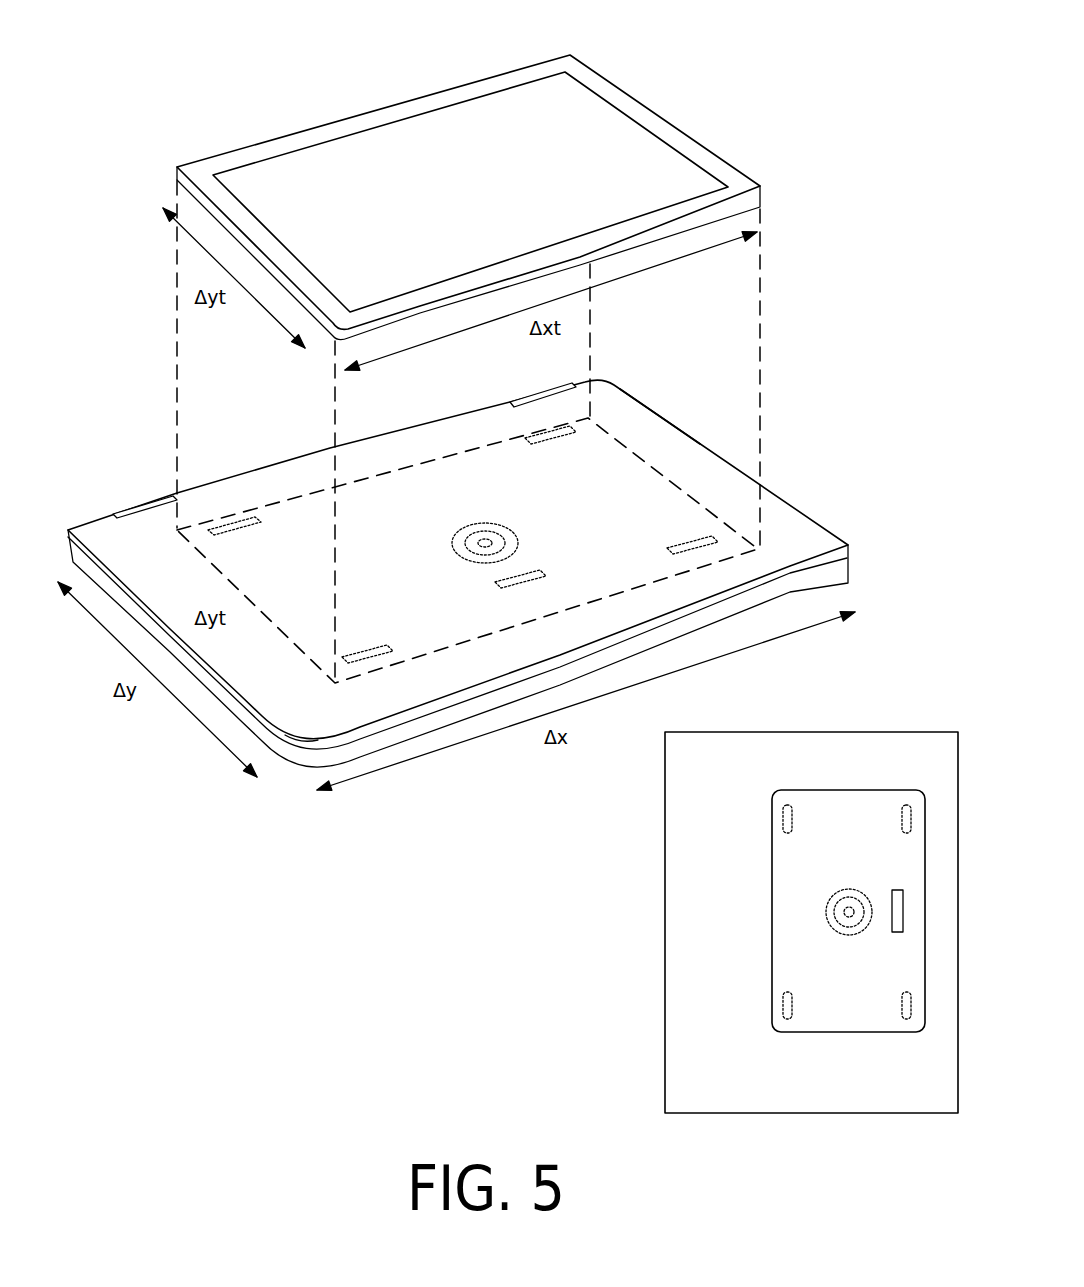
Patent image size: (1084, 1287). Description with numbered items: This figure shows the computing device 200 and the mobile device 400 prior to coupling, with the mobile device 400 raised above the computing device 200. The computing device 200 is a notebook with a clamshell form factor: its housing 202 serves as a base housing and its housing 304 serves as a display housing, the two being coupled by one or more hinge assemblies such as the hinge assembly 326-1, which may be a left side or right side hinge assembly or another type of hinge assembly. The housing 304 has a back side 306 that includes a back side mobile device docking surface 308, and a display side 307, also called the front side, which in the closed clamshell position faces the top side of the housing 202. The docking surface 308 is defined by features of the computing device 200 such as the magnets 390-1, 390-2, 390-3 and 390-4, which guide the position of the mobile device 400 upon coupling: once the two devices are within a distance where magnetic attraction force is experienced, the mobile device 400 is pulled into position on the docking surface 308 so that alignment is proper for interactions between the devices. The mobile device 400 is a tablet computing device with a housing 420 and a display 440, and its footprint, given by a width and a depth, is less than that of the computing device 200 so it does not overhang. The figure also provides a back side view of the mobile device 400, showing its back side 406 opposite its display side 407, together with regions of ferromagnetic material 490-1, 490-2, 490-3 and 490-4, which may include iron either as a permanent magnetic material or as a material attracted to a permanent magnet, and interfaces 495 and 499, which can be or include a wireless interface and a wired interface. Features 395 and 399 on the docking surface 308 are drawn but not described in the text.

The mobile device 400 is at (163, 143).
The housing 420 is at (283, 137).
The display side 407 is at (488, 88).
The display 440 is at (470, 192).
The back side 406 is at (655, 242).
The computing device 200 is at (660, 380).
The housing 304 is at (800, 523).
The housing 202 is at (833, 584).
The display side 307 is at (292, 752).
The back side 306 is at (662, 430).
The back side mobile device docking surface 308 is at (467, 550).
The hinge assembly 326-1 is at (125, 512).
The magnet 390-1 is at (392, 647).
The magnet 390-2 is at (229, 535).
The magnet 390-3 is at (534, 445).
The magnet 390-4 is at (685, 540).
The wireless charging coil 395 is at (458, 532).
The connector pad 399 is at (528, 578).
The region of ferromagnetic material 490-1 is at (908, 1020).
The region of ferromagnetic material 490-2 is at (788, 1020).
The region of ferromagnetic material 490-3 is at (788, 805).
The region of ferromagnetic material 490-4 is at (908, 805).
The interface 495 is at (845, 889).
The interface 499 is at (897, 933).